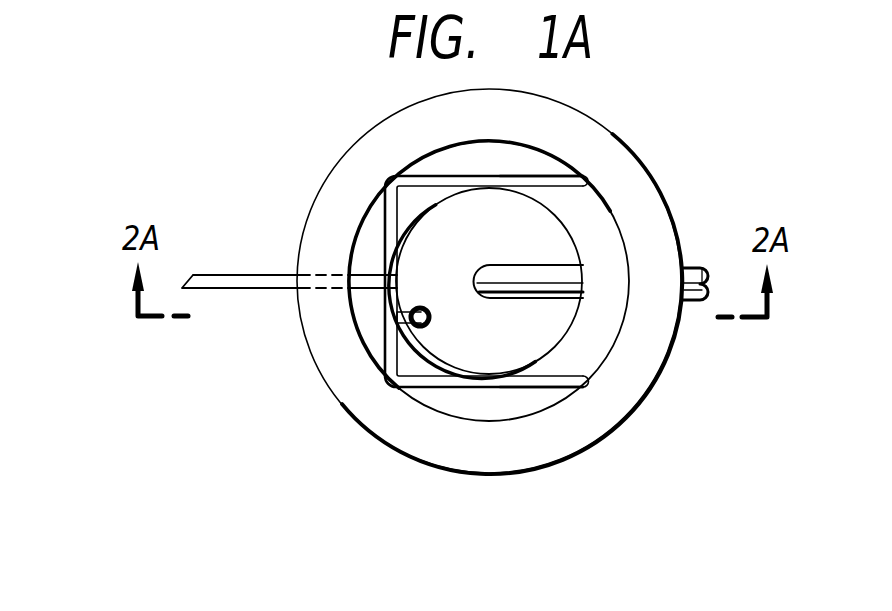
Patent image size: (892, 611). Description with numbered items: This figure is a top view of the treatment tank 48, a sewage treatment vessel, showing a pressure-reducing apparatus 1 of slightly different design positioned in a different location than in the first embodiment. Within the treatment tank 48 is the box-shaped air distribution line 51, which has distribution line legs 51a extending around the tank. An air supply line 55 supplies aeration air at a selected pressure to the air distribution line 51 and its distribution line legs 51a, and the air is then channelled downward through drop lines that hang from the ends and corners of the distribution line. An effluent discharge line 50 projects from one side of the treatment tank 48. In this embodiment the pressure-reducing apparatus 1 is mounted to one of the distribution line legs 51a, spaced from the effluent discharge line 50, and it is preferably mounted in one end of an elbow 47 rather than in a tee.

The pressure-reducing apparatus 1 is at (431, 305).
The elbow 47 is at (432, 318).
The treatment tank 48 is at (312, 369).
The effluent discharge line 50 is at (548, 268).
The air distribution line 51 is at (376, 245).
The distribution line legs 51a is at (474, 182).
The air supply line 55 is at (258, 283).